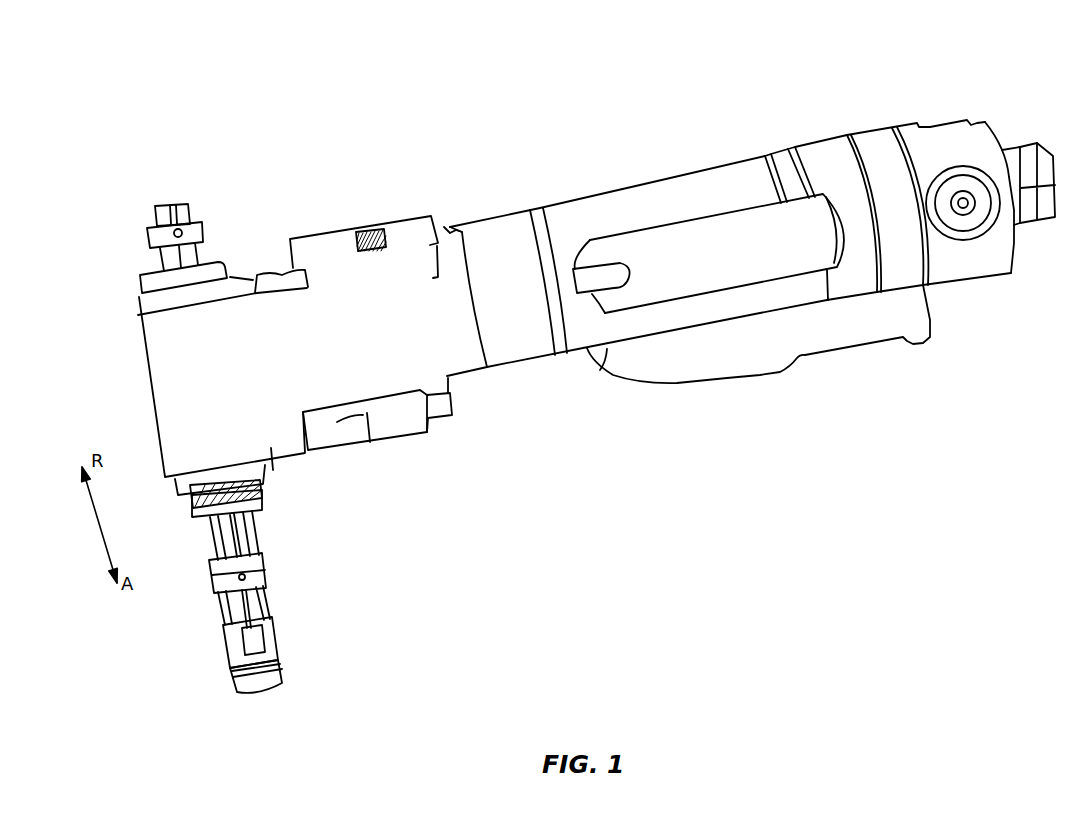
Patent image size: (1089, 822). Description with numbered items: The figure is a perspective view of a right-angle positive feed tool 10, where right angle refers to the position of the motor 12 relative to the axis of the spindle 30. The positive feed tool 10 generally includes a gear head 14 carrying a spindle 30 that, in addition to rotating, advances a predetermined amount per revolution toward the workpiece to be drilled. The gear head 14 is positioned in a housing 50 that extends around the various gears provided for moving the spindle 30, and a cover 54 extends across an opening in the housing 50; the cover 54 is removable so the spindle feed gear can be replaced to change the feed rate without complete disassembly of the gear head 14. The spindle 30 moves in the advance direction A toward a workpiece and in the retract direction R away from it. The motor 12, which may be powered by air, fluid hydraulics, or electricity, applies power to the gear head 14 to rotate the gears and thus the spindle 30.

The positive feed tool 10 is at (607, 108).
The motor 12 is at (717, 303).
The gear head 14 is at (298, 317).
The spindle 30 is at (257, 677).
The housing 50 is at (177, 367).
The cover 54 is at (177, 303).